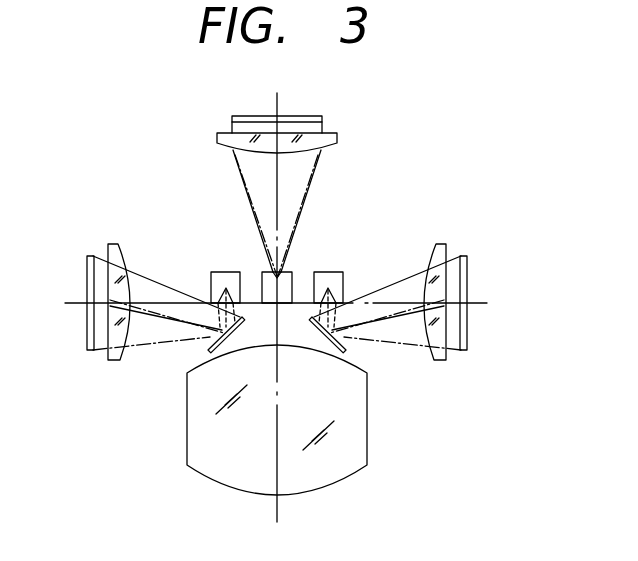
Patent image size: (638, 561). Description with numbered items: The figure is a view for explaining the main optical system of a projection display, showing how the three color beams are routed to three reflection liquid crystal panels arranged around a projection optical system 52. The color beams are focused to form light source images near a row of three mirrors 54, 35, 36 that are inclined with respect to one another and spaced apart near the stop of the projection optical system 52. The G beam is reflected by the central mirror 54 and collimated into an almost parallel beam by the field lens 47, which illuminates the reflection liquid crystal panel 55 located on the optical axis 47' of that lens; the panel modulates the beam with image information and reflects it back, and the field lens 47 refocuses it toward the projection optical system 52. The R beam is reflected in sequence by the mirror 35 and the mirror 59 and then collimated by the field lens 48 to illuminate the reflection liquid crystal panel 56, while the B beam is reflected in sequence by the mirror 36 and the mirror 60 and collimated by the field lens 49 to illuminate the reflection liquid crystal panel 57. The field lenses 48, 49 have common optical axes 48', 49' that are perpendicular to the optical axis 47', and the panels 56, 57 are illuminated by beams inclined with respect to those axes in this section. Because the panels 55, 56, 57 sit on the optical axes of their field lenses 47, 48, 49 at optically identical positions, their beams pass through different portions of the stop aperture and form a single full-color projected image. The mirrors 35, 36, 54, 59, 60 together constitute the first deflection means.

The mirror 35 is at (218, 272).
The mirror 36 is at (333, 272).
The field lens 47 is at (314, 193).
The optical axis 47' is at (312, 307).
The field lens 48 is at (166, 263).
The optical axis 48' is at (158, 276).
The field lens 49 is at (387, 266).
The optical axis 49' is at (395, 278).
The projection optical system 52 is at (367, 450).
The mirror 54 is at (270, 271).
The reflection liquid crystal panel 55 is at (323, 116).
The reflection liquid crystal panel 56 is at (90, 350).
The reflection liquid crystal panel 57 is at (464, 350).
The mirror 59 is at (209, 353).
The mirror 60 is at (345, 353).